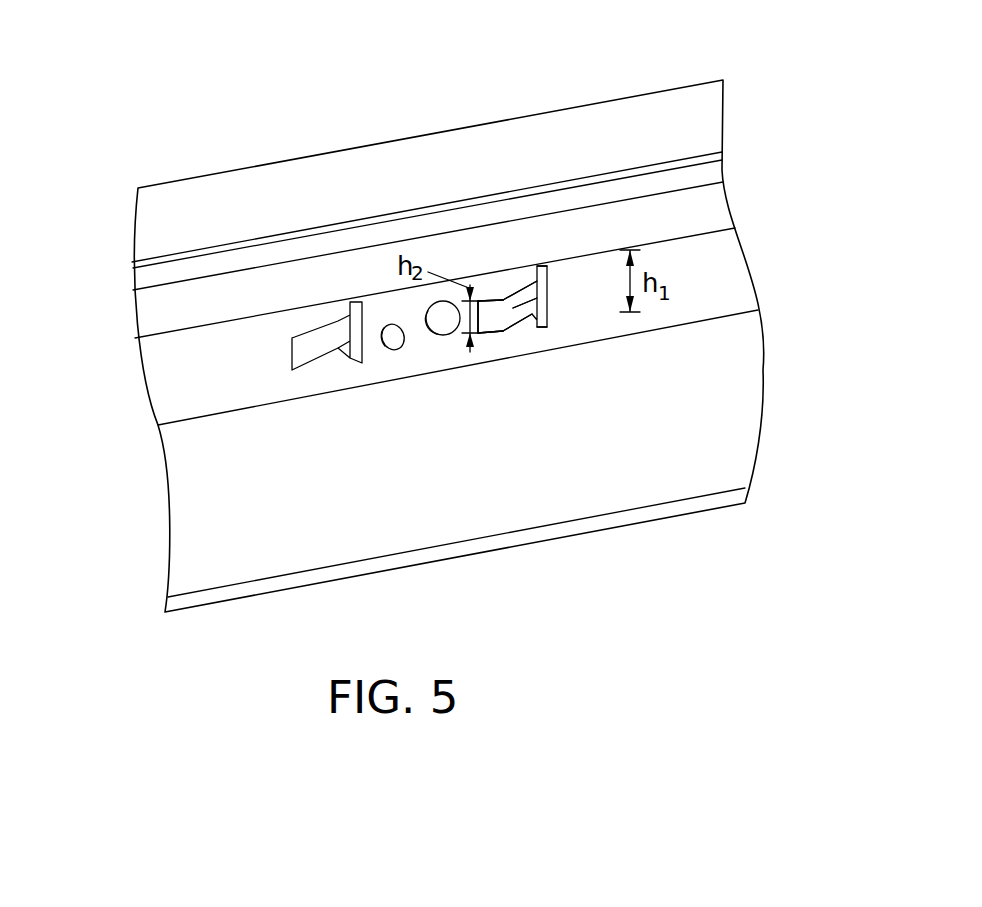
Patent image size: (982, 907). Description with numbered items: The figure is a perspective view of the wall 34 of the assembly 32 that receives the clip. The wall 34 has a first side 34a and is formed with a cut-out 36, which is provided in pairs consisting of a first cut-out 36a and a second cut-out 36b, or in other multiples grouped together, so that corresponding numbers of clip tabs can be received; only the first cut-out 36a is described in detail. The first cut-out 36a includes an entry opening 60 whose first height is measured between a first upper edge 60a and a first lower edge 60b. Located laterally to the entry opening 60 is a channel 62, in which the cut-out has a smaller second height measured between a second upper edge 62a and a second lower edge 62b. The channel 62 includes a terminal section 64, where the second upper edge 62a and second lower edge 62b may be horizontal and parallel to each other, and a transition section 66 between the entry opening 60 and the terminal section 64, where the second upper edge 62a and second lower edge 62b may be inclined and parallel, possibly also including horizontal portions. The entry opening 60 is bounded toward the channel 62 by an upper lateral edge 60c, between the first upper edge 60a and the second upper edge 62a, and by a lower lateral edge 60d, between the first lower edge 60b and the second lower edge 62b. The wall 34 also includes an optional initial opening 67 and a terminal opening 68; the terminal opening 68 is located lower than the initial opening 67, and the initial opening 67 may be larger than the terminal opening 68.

The assembly 32 is at (126, 509).
The wall 34 is at (94, 396).
The first side 34a is at (260, 376).
The cut-out 36 is at (700, 281).
The first cut-out 36a is at (529, 318).
The second cut-out 36b is at (333, 362).
The entry opening 60 is at (538, 266).
The first upper edge 60a is at (549, 267).
The first lower edge 60b is at (550, 327).
The upper lateral edge 60c is at (497, 296).
The lower lateral edge 60d is at (535, 317).
The channel 62 is at (511, 350).
The second upper edge 62a is at (483, 298).
The second lower edge 62b is at (492, 336).
The terminal section 64 is at (475, 297).
The transition section 66 is at (549, 299).
The initial opening 67 is at (437, 336).
The terminal opening 68 is at (395, 350).